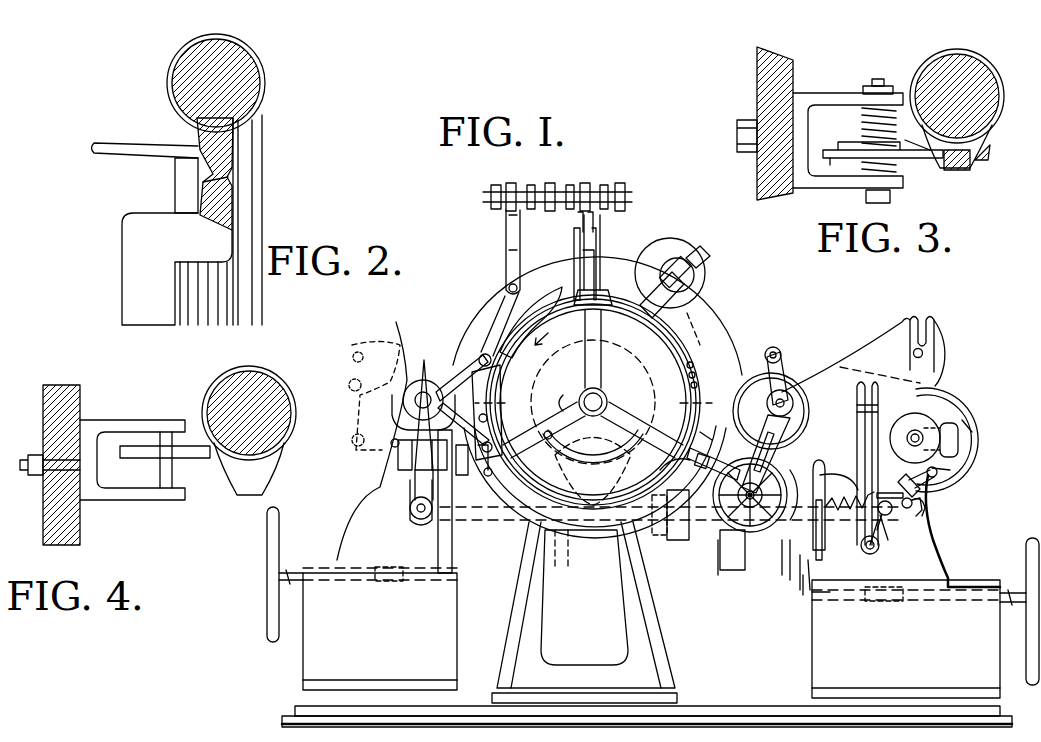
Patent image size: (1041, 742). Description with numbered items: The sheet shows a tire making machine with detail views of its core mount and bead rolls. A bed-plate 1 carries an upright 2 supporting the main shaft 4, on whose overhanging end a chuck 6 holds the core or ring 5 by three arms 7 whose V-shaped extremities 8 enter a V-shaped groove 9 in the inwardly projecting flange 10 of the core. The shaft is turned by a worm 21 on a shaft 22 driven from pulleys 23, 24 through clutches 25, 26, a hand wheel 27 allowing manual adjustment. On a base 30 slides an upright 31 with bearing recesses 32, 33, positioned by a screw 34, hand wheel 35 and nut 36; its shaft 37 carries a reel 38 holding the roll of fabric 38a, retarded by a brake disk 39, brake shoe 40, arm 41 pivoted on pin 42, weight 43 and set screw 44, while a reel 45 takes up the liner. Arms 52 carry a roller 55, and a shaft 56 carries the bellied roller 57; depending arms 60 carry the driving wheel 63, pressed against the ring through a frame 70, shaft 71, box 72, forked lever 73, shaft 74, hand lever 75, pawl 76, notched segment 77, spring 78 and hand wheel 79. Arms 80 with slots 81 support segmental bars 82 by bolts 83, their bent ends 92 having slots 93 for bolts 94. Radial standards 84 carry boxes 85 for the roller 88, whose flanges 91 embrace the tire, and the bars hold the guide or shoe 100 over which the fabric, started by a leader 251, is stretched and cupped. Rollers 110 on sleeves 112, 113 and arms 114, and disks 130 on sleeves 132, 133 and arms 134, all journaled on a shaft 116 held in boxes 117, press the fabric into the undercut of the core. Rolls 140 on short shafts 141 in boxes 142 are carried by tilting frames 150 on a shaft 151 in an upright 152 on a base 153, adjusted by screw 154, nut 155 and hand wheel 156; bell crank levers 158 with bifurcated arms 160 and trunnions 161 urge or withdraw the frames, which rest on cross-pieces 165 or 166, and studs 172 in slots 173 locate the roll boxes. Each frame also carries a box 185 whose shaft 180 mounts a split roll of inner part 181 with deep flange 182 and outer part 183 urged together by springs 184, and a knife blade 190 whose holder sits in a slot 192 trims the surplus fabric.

In FIG. 1, the bed-plate 1 is at (710, 713).
In FIG. 1, the upright 2 is at (652, 655).
In FIG. 1, the main shaft 4 is at (598, 404).
In FIG. 1, the chuck 6 is at (640, 370).
In FIG. 1, the outwardly projecting arms 7 is at (667, 456).
In FIG. 2, the outwardly projecting arms 7 is at (130, 256).
In FIG. 2, the core or ring 5 is at (257, 62).
In FIG. 2, the V-shaped extremities 8 is at (175, 188).
In FIG. 2, the V-shaped groove 9 is at (232, 168).
In FIG. 2, the inwardly projecting flange 10 is at (232, 162).
In FIG. 2, the blade 190 is at (128, 143).
In FIG. 1, the worm 21 is at (596, 515).
In FIG. 1, the shaft 22 is at (508, 517).
In FIG. 1, the pulley 23 is at (720, 565).
In FIG. 1, the pulley 24 is at (745, 568).
In FIG. 1, the clutch 25 is at (690, 520).
In FIG. 1, the clutch 26 is at (803, 600).
In FIG. 1, the hand wheel 27 is at (452, 560).
In FIG. 1, the base 30 is at (906, 639).
In FIG. 1, the upright 31 is at (940, 560).
In FIG. 3, the upright 31 is at (957, 109).
In FIG. 1, the bearing recess 32 is at (950, 425).
In FIG. 1, the bearing recess 33 is at (930, 322).
In FIG. 1, the screw 34 is at (1025, 617).
In FIG. 1, the hand wheel 35 is at (1030, 555).
In FIG. 1, the nut 36 is at (888, 603).
In FIG. 1, the shaft 37 is at (924, 440).
In FIG. 1, the reel 38 is at (952, 408).
In FIG. 1, the roll of fabric 38a is at (975, 433).
In FIG. 1, the brake disk 39 is at (928, 420).
In FIG. 1, the brake shoe 40 is at (950, 470).
In FIG. 1, the arm 41 is at (936, 486).
In FIG. 1, the pin 42 is at (937, 478).
In FIG. 1, the weight 43 is at (930, 505).
In FIG. 1, the set screw 44 is at (890, 477).
In FIG. 1, the reel 45 is at (944, 350).
In FIG. 1, the upwardly extending arms 52 is at (766, 350).
In FIG. 1, the roller 55 is at (780, 352).
In FIG. 1, the shaft 56 is at (788, 392).
In FIG. 1, the convex or bellied roller 57 is at (768, 366).
In FIG. 1, the depending arms 60 is at (761, 471).
In FIG. 1, the driving wheel 63 is at (750, 514).
In FIG. 1, the frame 70 is at (818, 497).
In FIG. 1, the shaft 71 is at (822, 535).
In FIG. 1, the box 72 is at (888, 516).
In FIG. 1, the forked lever 73 is at (882, 548).
In FIG. 1, the shaft 74 is at (866, 552).
In FIG. 1, the hand lever 75 is at (870, 445).
In FIG. 1, the pawl 76 is at (856, 480).
In FIG. 1, the notched segment 77 is at (910, 508).
In FIG. 1, the spring 78 is at (827, 611).
In FIG. 1, the hand wheel 79 is at (795, 591).
In FIG. 1, the arms 80 is at (716, 540).
In FIG. 1, the slots 81 is at (713, 464).
In FIG. 1, the segmental bars 82 is at (713, 444).
In FIG. 1, the bolts 83 is at (693, 472).
In FIG. 1, the radial standard 84 is at (698, 248).
In FIG. 1, the box 85 is at (690, 268).
In FIG. 1, the roller 88 is at (658, 258).
In FIG. 1, the flanges 91 is at (694, 280).
In FIG. 1, the upwardly bent rear ends 92 is at (775, 488).
In FIG. 1, the slots 93 is at (790, 560).
In FIG. 1, the bolts 94 is at (786, 577).
In FIG. 1, the fabric shaping guide or shoe 100 is at (710, 352).
In FIG. 1, the rollers 110 is at (612, 222).
In FIG. 1, the sleeve 112 is at (598, 238).
In FIG. 1, the sleeve 113 is at (583, 248).
In FIG. 1, the arms 114 is at (578, 218).
In FIG. 1, the shaft 116 is at (483, 197).
In FIG. 1, the boxes 117 is at (552, 185).
In FIG. 1, the disks 130 is at (512, 312).
In FIG. 1, the sleeve 132 is at (513, 274).
In FIG. 1, the sleeve 133 is at (507, 262).
In FIG. 1, the arms 134 is at (506, 222).
In FIG. 1, the rolls 140 is at (490, 350).
In FIG. 4, the rolls 140 is at (200, 446).
In FIG. 4, the short shafts 141 is at (165, 462).
In FIG. 4, the boxes 142 is at (118, 425).
In FIG. 1, the tilting frames 150 is at (478, 372).
In FIG. 3, the tilting frames 150 is at (749, 123).
In FIG. 4, the tilting frames 150 is at (80, 540).
In FIG. 1, the shaft 151 is at (418, 385).
In FIG. 1, the upright 152 is at (375, 530).
In FIG. 1, the base 153 is at (380, 631).
In FIG. 1, the screw 154 is at (291, 585).
In FIG. 1, the nut 155 is at (380, 582).
In FIG. 1, the hand wheel 156 is at (267, 608).
In FIG. 1, the bell crank levers 158 is at (410, 490).
In FIG. 1, the bifurcated upper arms 160 is at (392, 405).
In FIG. 1, the trunnions 161 is at (375, 372).
In FIG. 1, the cross-piece 165 is at (468, 476).
In FIG. 1, the cross-piece 166 is at (388, 455).
In FIG. 1, the studs 172 is at (560, 396).
In FIG. 1, the slots 173 is at (544, 434).
In FIG. 3, the shaft 180 is at (892, 198).
In FIG. 3, the inner part 181 is at (850, 160).
In FIG. 3, the deep flange 182 is at (840, 150).
In FIG. 3, the outer part 183 is at (862, 120).
In FIG. 3, the springs 184 is at (920, 170).
In FIG. 3, the box 185 is at (798, 178).
In FIG. 1, the slot 192 is at (492, 467).
In FIG. 1, the leader 251 is at (719, 316).